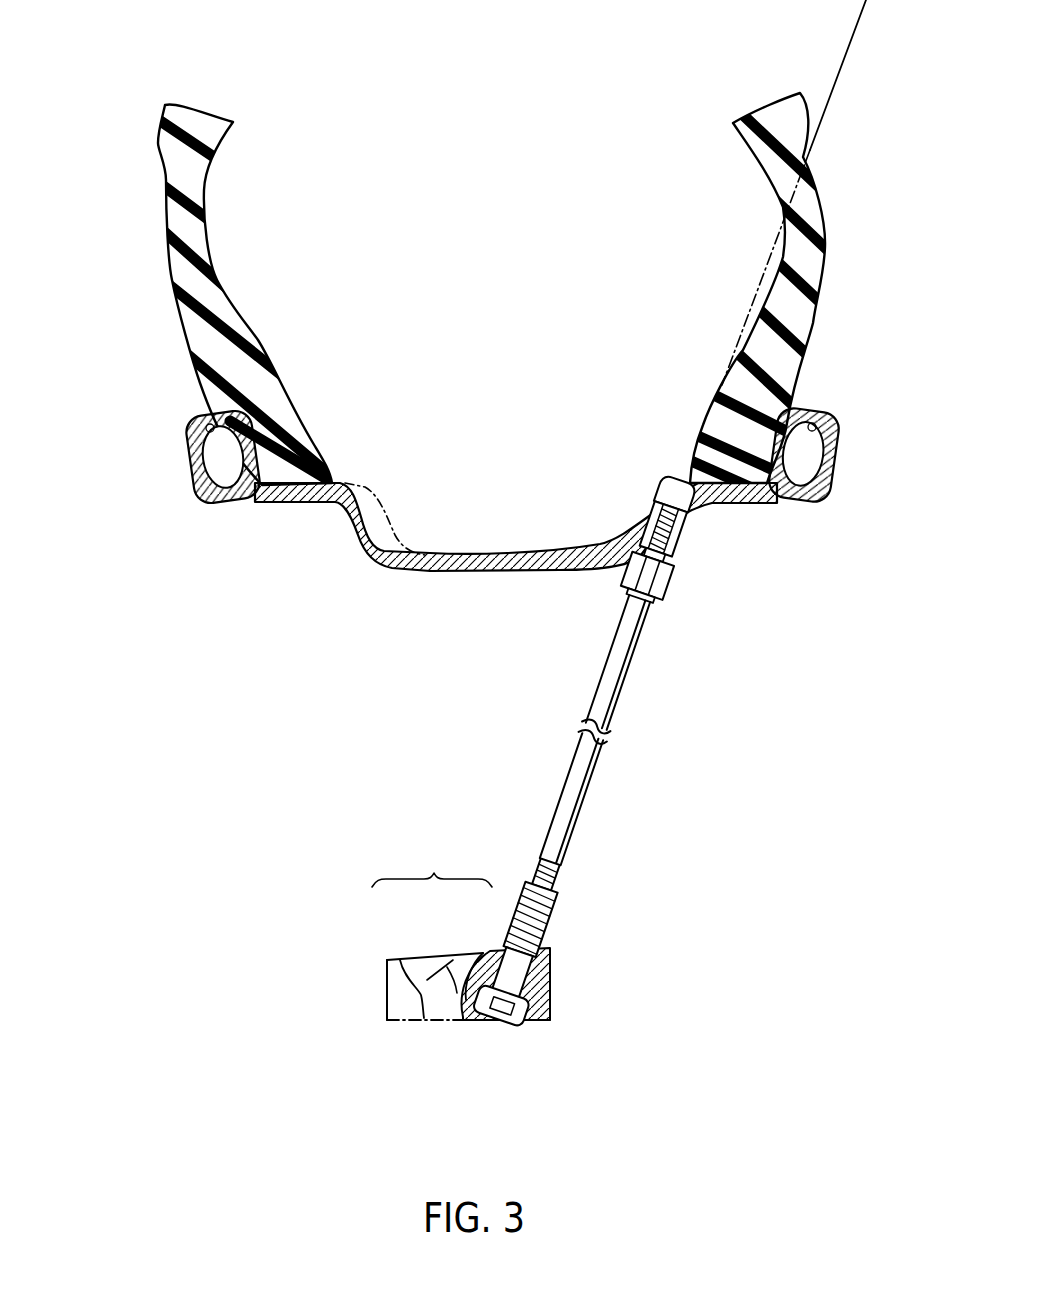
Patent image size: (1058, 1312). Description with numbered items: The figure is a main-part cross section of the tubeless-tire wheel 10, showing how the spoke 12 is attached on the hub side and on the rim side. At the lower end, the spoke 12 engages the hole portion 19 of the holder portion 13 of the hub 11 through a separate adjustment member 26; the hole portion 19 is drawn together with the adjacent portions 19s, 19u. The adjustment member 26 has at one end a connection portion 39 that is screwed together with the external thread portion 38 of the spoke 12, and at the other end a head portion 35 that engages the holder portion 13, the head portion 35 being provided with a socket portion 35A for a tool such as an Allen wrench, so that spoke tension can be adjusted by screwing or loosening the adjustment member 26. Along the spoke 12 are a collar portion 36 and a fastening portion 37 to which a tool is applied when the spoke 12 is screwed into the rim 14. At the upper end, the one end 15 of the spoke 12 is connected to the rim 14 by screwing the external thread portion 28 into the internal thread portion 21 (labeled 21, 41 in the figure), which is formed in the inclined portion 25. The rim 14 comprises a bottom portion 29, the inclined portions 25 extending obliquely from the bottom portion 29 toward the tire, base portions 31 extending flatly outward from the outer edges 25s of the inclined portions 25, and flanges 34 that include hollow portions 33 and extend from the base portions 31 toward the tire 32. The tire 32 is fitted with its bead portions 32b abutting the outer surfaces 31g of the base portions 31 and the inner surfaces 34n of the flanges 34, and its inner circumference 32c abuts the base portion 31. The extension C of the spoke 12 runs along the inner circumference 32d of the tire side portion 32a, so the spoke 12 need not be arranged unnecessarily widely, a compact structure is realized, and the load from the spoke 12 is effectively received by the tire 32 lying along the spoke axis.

The extension of the spoke C is at (843, 62).
The tubeless-tire wheel 10 is at (905, 386).
The hub 11 is at (556, 1012).
The spoke 12 is at (557, 793).
The holder portion 13 is at (553, 984).
The rim 14 is at (459, 575).
The one end of the spoke 15 is at (681, 522).
The hole portion 19 is at (432, 865).
The spoke hole side surface 19s is at (410, 963).
The spoke hole seat 19u is at (508, 948).
The internal thread portion 21 is at (645, 534).
The nipple body 41 is at (645, 534).
The inclined portion 25 is at (339, 549).
The outer edge of the inclined portion 25s is at (340, 506).
The adjustment member 26 is at (570, 925).
The external thread portion 28 is at (654, 508).
The bottom portion 29 is at (512, 573).
The base portion 31 is at (260, 508).
The outer surface of the base portion 31g is at (325, 480).
The tire 32 is at (160, 275).
The tire side portion 32a is at (213, 345).
The bead portion 32b is at (292, 456).
The inner circumference of the tire 32c is at (278, 490).
The inner circumference of the tire side portion 32d is at (225, 291).
The hollow portion 33 is at (198, 420).
The flange 34 is at (188, 458).
The inner surface of the flange 34n is at (282, 448).
The head portion 35 is at (547, 1017).
The socket portion 35A is at (497, 1022).
The collar portion 36 is at (670, 585).
The fastening portion 37 is at (660, 602).
The external thread portion 38 is at (553, 906).
The connection portion 39 is at (527, 880).